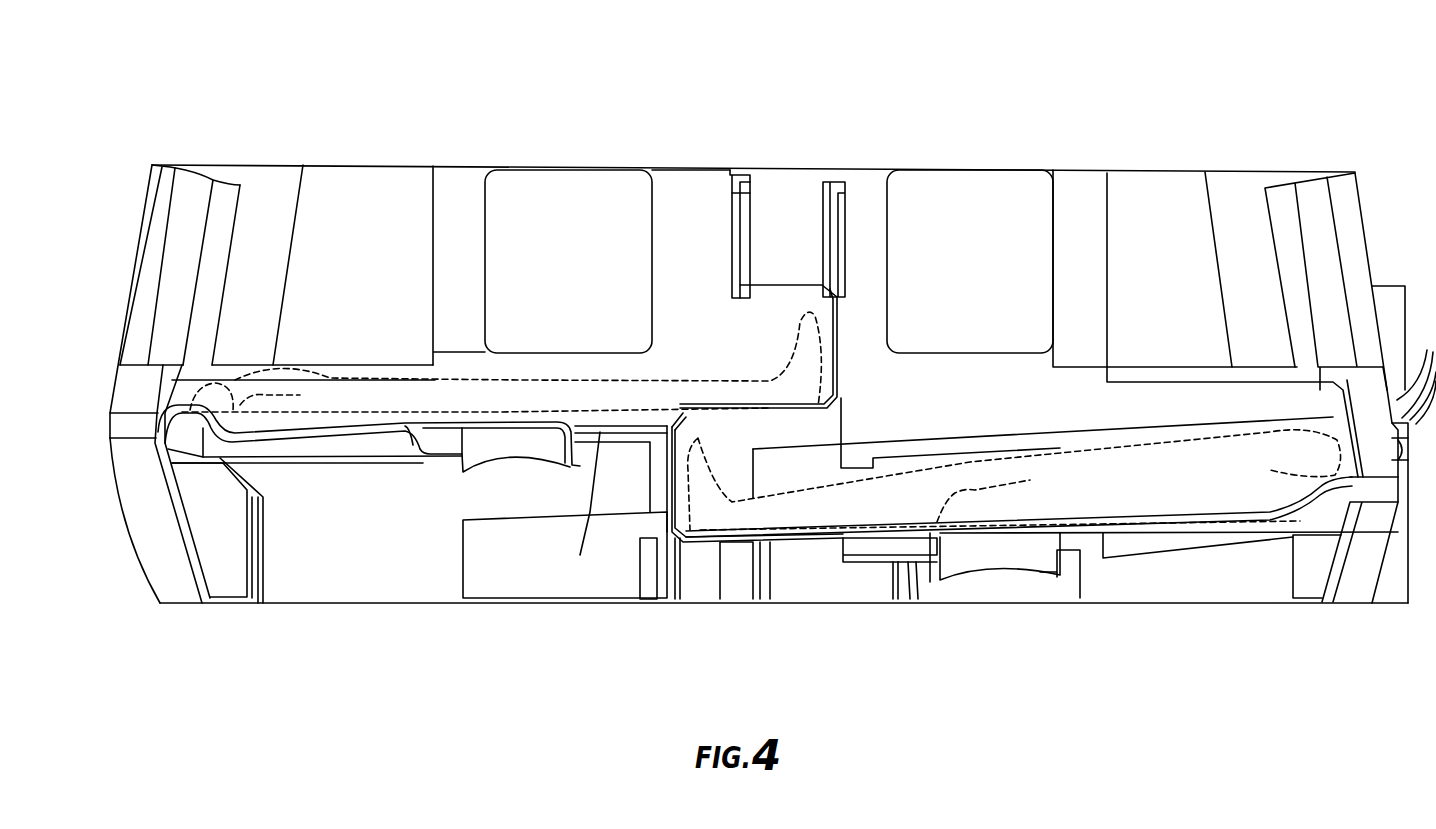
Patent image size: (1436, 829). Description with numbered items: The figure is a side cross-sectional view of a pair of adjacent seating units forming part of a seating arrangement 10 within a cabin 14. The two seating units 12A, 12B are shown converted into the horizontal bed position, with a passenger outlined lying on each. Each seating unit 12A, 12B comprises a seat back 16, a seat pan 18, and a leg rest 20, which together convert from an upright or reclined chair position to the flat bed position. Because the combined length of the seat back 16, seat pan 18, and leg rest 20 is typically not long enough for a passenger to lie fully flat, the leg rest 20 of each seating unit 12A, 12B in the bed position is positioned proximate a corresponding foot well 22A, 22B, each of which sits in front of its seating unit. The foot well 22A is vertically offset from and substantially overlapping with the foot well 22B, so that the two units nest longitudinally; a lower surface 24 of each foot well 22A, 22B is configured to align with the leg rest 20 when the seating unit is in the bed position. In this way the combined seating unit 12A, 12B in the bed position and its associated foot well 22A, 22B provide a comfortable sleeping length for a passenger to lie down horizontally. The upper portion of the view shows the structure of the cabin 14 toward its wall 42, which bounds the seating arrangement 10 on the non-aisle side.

The seating arrangement 10 is at (200, 100).
The seating unit 12A is at (483, 443).
The seating unit 12B is at (878, 520).
The cabin 14 is at (673, 198).
The seat back 16 is at (282, 445).
The seat pan 18 is at (463, 472).
The leg rest 20 is at (580, 555).
The foot well 22A is at (788, 285).
The foot well 22B is at (782, 527).
The lower surface 24 is at (722, 407).
The wall 42 is at (1083, 200).